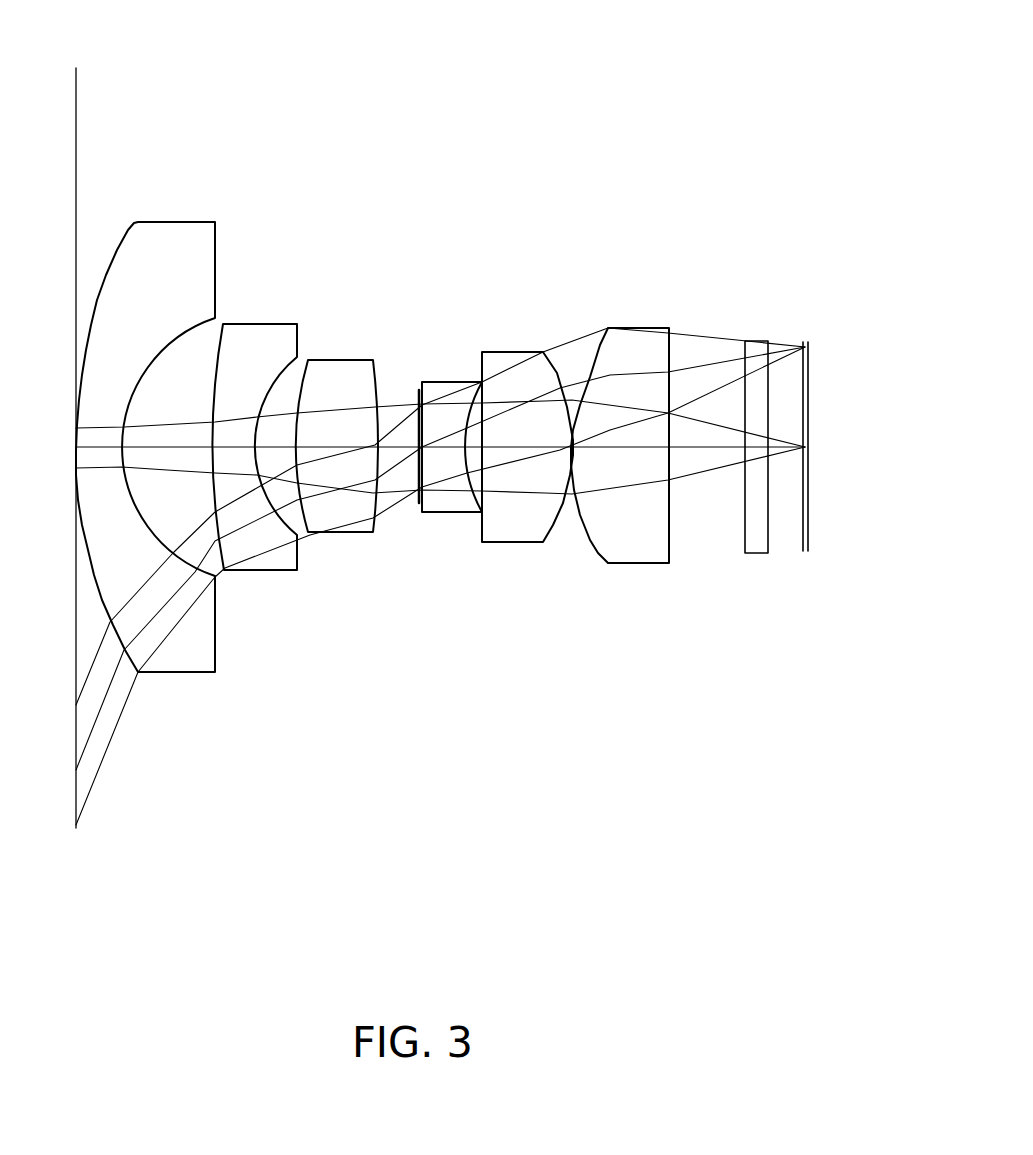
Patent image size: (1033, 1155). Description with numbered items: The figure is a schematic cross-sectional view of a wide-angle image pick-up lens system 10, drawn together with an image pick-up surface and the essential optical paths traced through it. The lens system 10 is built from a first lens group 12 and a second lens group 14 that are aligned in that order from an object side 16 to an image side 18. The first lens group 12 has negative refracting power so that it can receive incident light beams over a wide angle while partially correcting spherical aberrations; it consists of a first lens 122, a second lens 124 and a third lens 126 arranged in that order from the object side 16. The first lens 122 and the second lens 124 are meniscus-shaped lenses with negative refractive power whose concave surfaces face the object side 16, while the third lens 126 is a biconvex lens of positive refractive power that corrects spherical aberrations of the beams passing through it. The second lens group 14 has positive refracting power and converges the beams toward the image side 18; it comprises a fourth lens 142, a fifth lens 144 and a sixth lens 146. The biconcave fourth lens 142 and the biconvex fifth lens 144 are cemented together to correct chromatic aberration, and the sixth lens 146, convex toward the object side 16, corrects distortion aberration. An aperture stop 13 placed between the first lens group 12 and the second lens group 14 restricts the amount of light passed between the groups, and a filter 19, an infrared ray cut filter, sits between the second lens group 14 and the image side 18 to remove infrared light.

The lens system 10 is at (478, 427).
The first lens group 12 is at (385, 233).
The aperture stop 13 is at (419, 503).
The second lens group 14 is at (677, 233).
The object side 16 is at (76, 793).
The image side 18 is at (803, 513).
The filter 19 is at (745, 528).
The first lens 122 is at (180, 650).
The second lens 124 is at (268, 562).
The third lens 126 is at (360, 528).
The fourth lens 142 is at (461, 497).
The fifth lens 144 is at (513, 533).
The sixth lens 146 is at (638, 537).